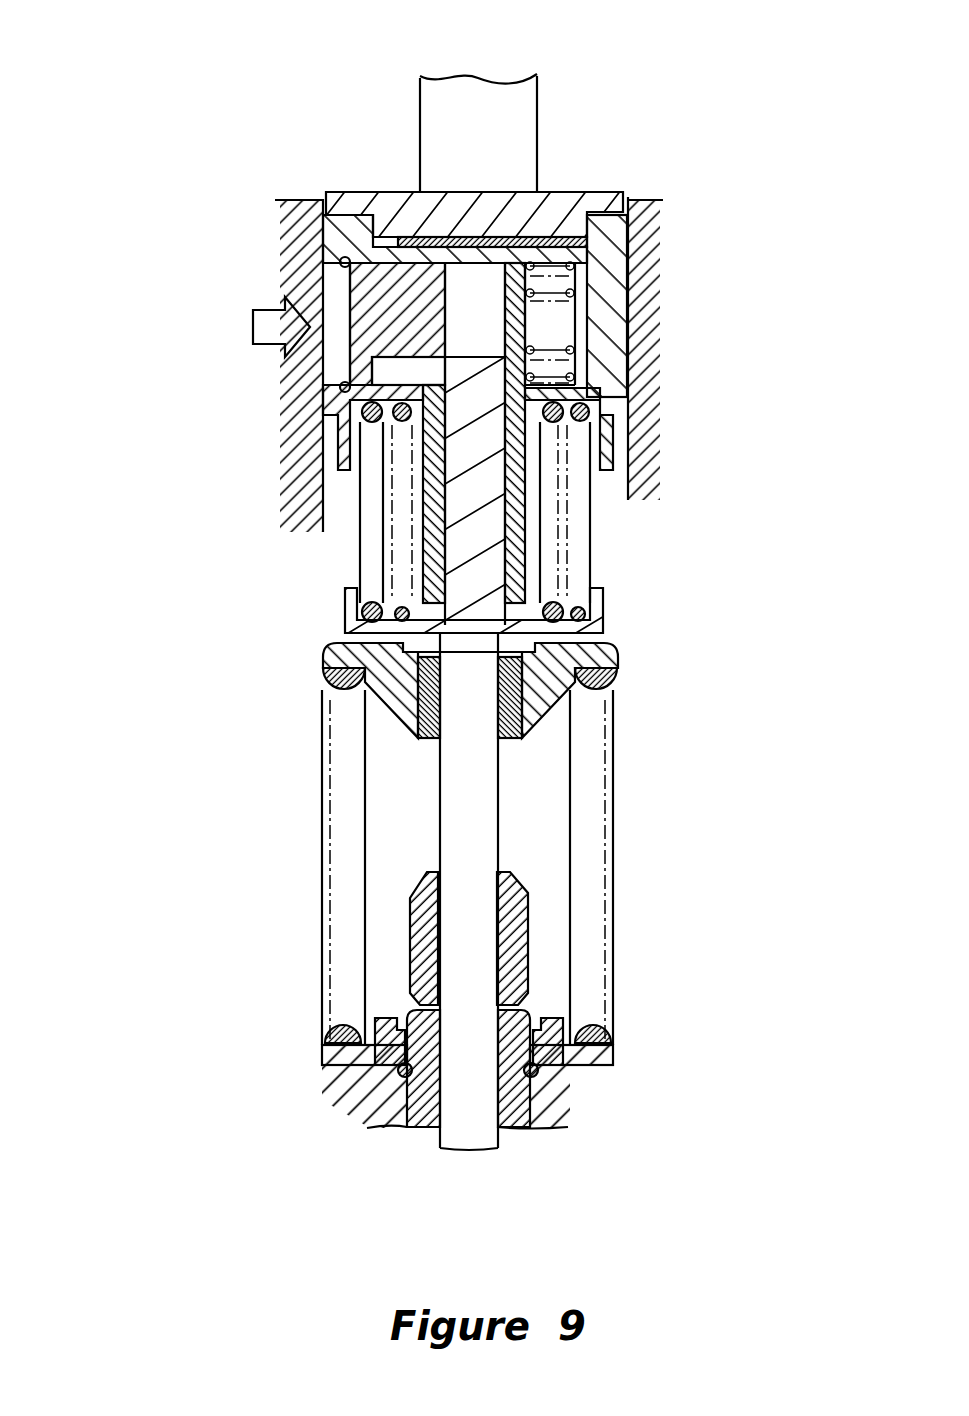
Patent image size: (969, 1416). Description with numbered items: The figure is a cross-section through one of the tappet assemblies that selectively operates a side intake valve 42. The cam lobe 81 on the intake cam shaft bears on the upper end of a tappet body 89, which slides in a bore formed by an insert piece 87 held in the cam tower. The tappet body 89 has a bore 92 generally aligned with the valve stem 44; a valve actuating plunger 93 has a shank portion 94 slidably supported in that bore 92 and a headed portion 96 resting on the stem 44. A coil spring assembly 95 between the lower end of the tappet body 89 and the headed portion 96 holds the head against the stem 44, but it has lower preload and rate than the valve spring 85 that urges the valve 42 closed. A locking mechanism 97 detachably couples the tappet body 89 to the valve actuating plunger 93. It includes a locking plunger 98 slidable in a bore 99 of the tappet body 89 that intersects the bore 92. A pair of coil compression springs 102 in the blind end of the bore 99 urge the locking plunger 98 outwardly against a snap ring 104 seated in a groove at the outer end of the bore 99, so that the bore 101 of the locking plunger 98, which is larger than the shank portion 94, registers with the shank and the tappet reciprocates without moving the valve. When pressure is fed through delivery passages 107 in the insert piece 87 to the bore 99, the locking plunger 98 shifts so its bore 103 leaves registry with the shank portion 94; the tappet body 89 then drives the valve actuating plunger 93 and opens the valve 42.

The cam lobe 81 is at (463, 78).
The insert piece 87 is at (303, 200).
The bore 101 is at (497, 275).
The locking mechanism 97 is at (338, 278).
The locking plunger 98 is at (350, 289).
The delivery passage 107 is at (333, 347).
The tappet body 89 is at (262, 392).
The snap ring 104 is at (393, 375).
The bore 99 is at (372, 400).
The bore 103 is at (562, 340).
The coil compression springs 102 is at (575, 332).
The shank portion 94 is at (583, 392).
The bore 92 is at (503, 440).
The coil spring assembly 95 is at (593, 535).
The valve actuating plunger 93 is at (516, 562).
The headed portion 96 is at (605, 613).
The side intake valve 42 is at (508, 810).
The stem portion 44 is at (505, 852).
The coil compression spring 85 is at (613, 937).